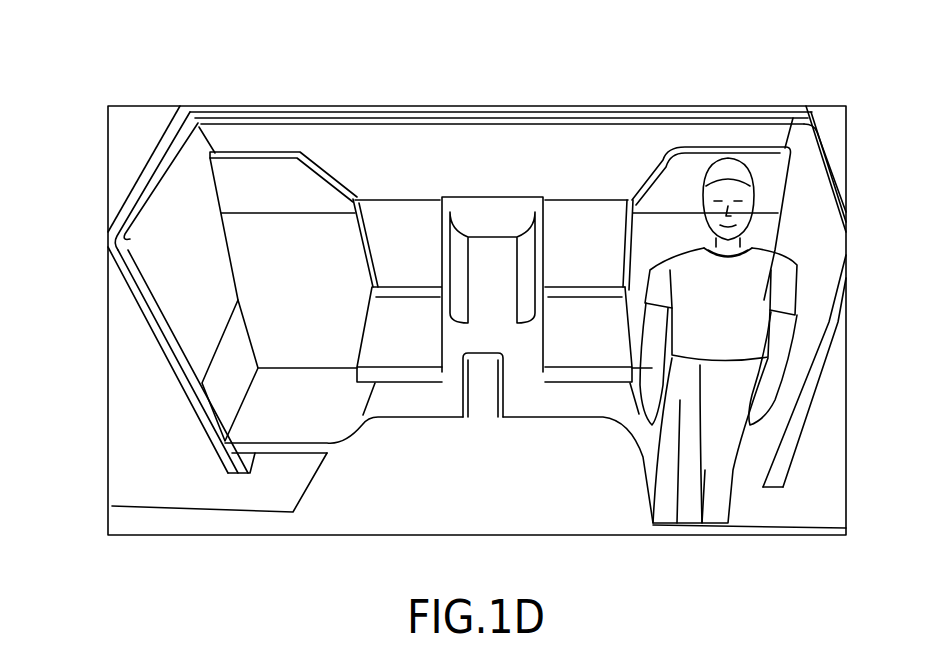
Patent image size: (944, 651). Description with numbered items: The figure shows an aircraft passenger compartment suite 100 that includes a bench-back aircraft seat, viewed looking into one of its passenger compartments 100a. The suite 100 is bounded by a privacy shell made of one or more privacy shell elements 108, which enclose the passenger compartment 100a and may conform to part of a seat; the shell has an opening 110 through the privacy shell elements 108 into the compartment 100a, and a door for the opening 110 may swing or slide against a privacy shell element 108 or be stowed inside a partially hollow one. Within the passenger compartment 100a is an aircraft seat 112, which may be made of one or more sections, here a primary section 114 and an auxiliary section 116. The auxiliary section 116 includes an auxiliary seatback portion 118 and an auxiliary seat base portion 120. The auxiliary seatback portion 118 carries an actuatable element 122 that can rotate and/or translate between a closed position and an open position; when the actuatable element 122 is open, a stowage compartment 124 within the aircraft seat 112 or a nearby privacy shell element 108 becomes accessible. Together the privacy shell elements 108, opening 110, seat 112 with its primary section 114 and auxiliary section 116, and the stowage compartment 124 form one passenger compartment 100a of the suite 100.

The aircraft passenger compartment suite 100 is at (88, 62).
The passenger compartment 100a is at (177, 435).
The privacy shell element 108 is at (132, 197).
The opening 110 is at (130, 382).
The aircraft seat 112 is at (273, 467).
The primary section 114 is at (320, 300).
The auxiliary section 116 is at (405, 193).
The auxiliary seatback portion 118 is at (379, 231).
The auxiliary seat base portion 120 is at (431, 411).
The actuatable element 122 is at (423, 346).
The stowage compartment 124 is at (423, 255).